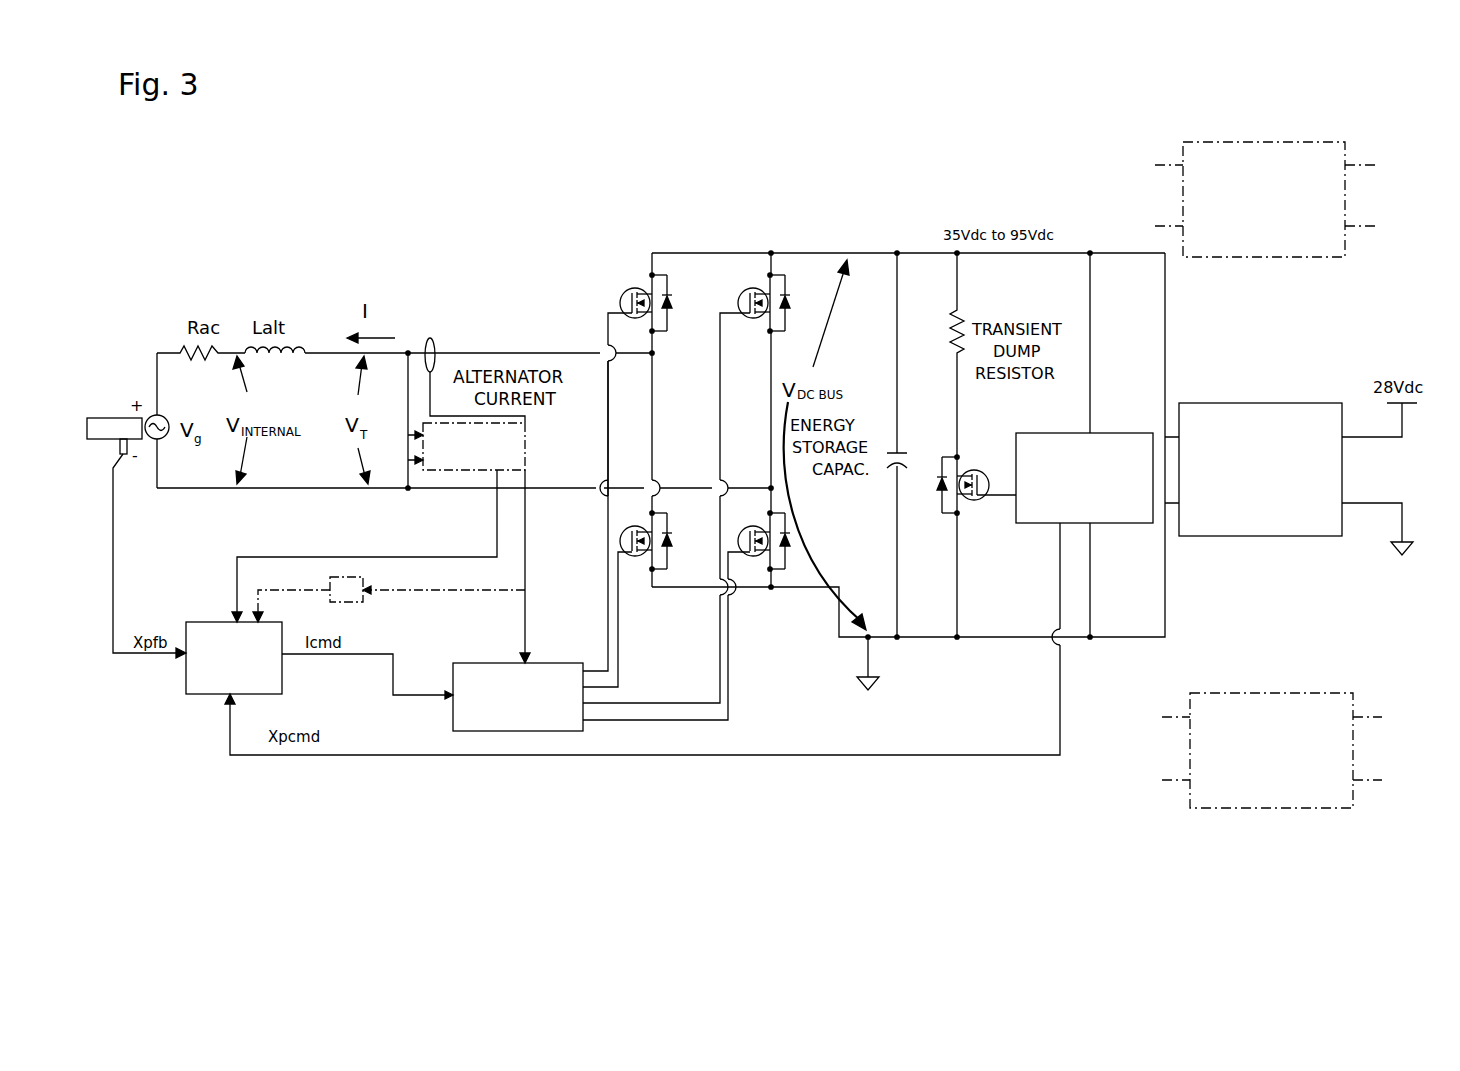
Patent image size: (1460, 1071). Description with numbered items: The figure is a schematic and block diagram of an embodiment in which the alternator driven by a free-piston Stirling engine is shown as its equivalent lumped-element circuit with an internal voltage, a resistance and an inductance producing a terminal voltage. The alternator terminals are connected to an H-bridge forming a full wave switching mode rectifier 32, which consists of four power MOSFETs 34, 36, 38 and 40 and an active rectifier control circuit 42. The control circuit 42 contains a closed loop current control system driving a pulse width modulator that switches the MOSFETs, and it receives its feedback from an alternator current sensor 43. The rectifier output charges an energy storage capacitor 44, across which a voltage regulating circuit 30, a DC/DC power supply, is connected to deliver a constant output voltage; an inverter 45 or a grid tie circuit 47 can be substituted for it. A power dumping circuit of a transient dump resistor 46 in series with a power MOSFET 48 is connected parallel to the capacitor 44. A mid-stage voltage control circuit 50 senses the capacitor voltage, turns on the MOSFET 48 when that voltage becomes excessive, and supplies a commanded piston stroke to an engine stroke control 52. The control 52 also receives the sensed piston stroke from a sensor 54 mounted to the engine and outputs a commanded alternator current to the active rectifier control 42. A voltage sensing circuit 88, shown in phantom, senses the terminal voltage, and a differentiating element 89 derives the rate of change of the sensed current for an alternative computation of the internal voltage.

The voltage regulating circuit 30 is at (1275, 537).
The full wave switching mode rectifier 32 is at (725, 226).
The power MOSFET 34 is at (620, 291).
The power MOSFET 36 is at (738, 297).
The power MOSFET 38 is at (750, 528).
The power MOSFET 40 is at (630, 560).
The active rectifier control circuit 42 is at (465, 661).
The alternator current sensor 43 is at (437, 341).
The energy storage capacitor 44 is at (906, 452).
The inverter 45 is at (1258, 152).
The transient dump resistor 46 is at (964, 316).
The grid tie circuit 47 is at (1312, 811).
The power MOSFET 48 is at (972, 468).
The mid-stage voltage control circuit 50 is at (1100, 432).
The engine stroke control 52 is at (226, 622).
The sensor 54 is at (125, 462).
The voltage sensing circuit 88 is at (438, 475).
The differentiating element 89 is at (355, 604).